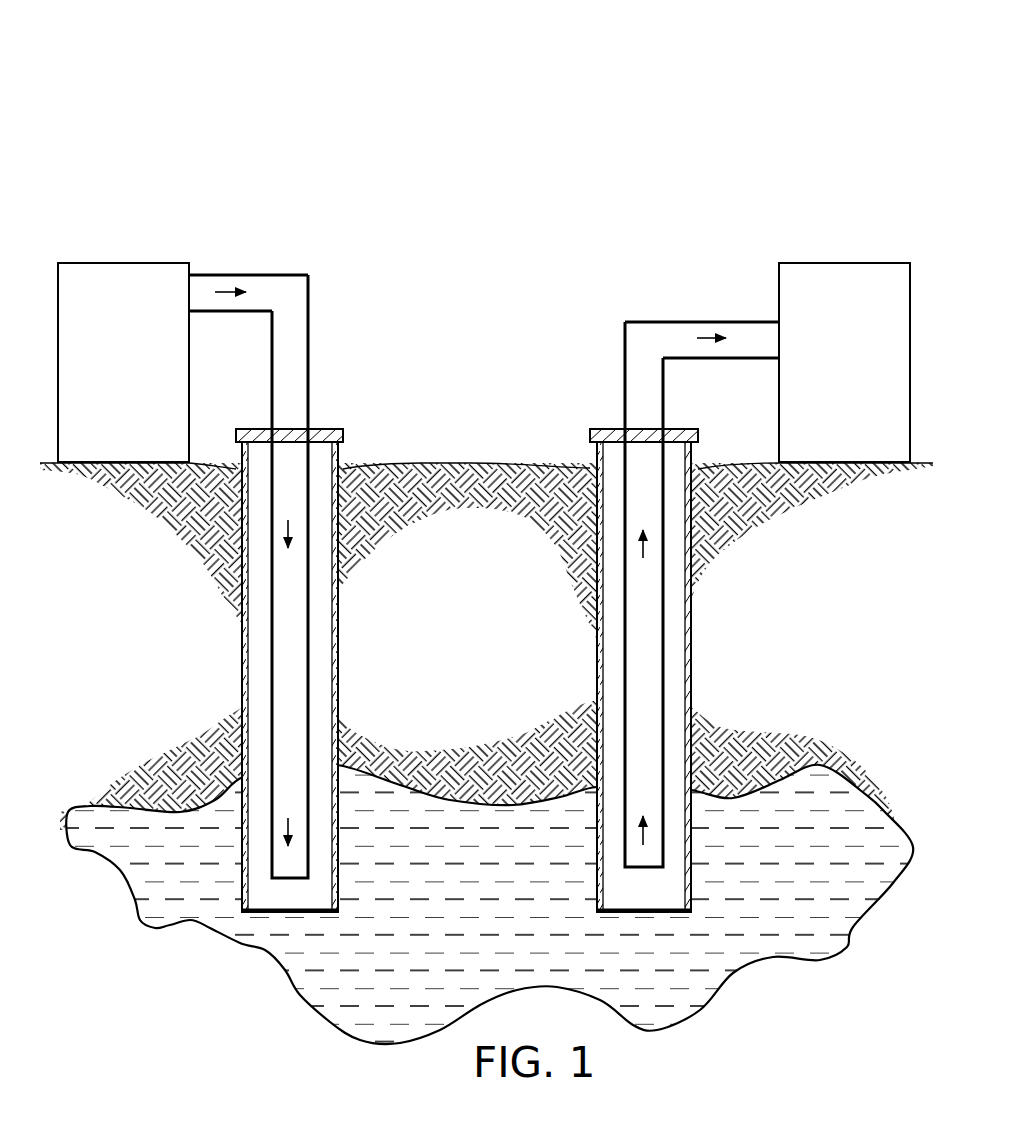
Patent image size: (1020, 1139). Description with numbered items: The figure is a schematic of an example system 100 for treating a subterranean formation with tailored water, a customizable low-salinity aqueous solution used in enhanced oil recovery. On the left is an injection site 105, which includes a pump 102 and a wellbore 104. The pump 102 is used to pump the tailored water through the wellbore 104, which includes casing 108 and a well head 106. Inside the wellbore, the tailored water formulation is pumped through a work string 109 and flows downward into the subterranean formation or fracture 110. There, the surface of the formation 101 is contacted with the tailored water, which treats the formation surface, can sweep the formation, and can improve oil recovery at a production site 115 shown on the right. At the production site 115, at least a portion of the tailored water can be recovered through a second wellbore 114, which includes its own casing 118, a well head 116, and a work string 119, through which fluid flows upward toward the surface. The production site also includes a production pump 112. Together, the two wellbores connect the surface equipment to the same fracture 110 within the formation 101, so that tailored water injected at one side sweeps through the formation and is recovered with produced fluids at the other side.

The system 100 is at (184, 85).
The formation 101 is at (115, 645).
The pump 102 is at (146, 380).
The wellbore 104 is at (332, 615).
The injection site 105 is at (296, 518).
The well head 106 is at (344, 432).
The casing 108 is at (339, 640).
The work string 109 is at (309, 665).
The fracture 110 is at (505, 914).
The production pump 112 is at (867, 380).
The second wellbore 114 is at (647, 615).
The production site 115 is at (721, 505).
The well head 116 is at (590, 432).
The casing 118 is at (692, 640).
The work string 119 is at (664, 665).